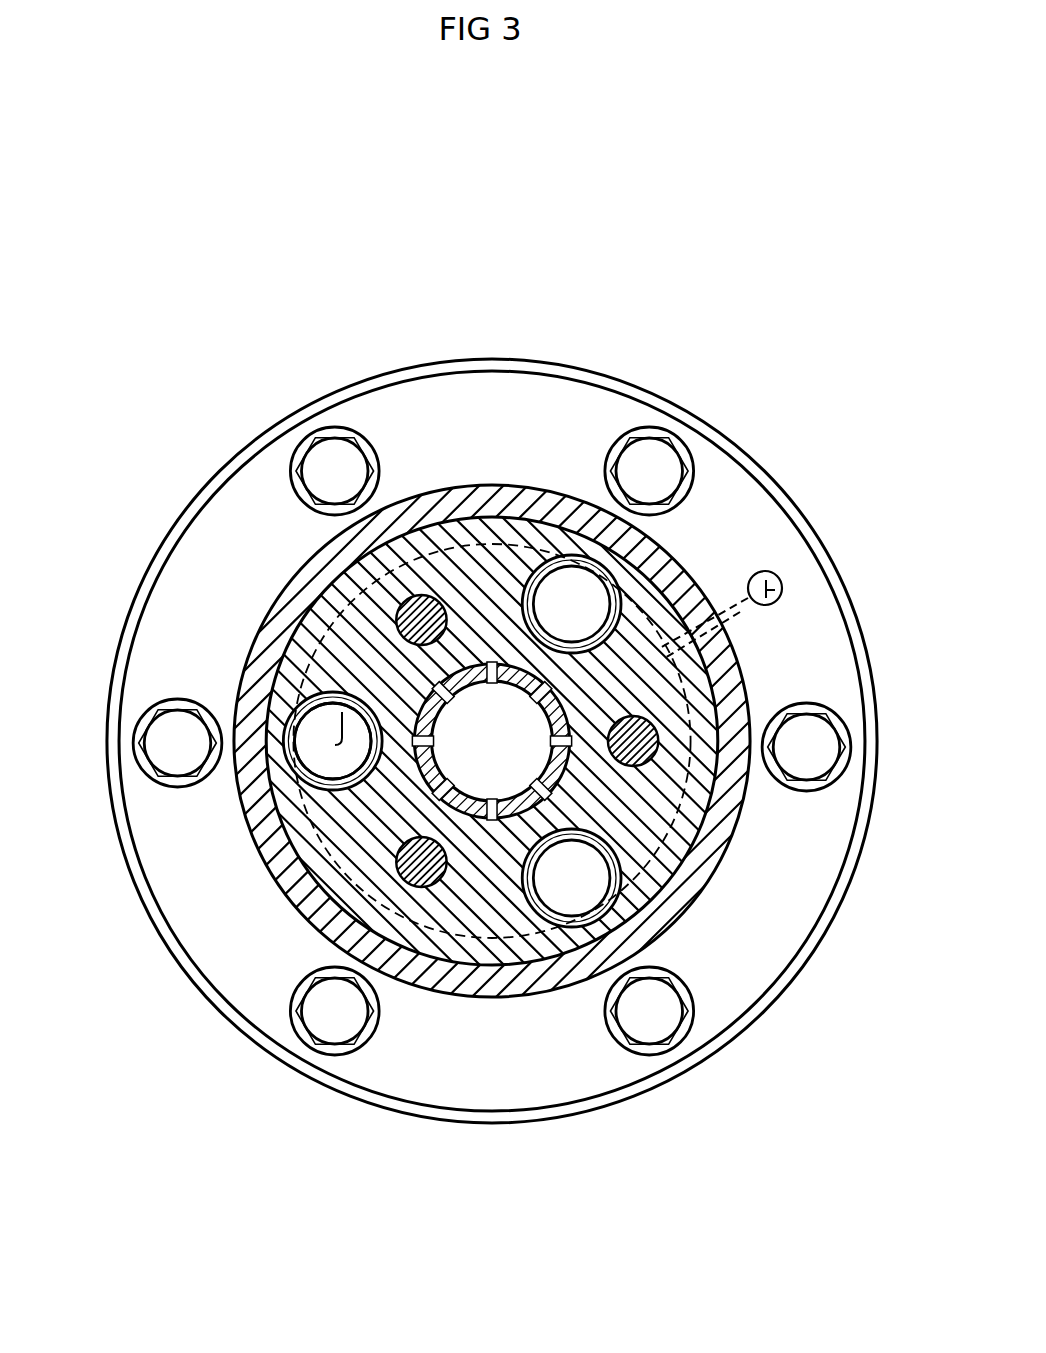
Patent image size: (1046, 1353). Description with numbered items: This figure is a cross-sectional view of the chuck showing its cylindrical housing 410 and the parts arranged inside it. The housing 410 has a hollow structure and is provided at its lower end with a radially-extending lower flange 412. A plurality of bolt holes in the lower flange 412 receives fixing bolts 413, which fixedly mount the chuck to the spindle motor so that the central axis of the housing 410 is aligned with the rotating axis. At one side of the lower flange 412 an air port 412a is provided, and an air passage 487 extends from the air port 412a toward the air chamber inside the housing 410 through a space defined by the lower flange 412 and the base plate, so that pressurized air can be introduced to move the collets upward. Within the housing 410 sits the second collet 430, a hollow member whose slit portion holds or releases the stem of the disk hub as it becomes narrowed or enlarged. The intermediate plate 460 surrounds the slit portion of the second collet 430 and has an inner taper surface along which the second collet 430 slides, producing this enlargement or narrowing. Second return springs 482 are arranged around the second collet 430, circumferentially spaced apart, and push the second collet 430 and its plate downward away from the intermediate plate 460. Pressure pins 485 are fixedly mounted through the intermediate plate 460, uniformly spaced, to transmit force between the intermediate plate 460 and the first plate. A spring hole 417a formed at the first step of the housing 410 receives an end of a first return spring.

The housing 410 is at (678, 560).
The lower flange 412 is at (537, 392).
The air port 412a is at (781, 592).
The fixing bolts 413 is at (330, 447).
The spring hole 417a is at (340, 718).
The second collet 430 is at (413, 700).
The intermediate plate 460 is at (470, 950).
The second return springs 482 is at (307, 783).
The pressure pins 485 is at (655, 730).
The air passage 487 is at (729, 603).